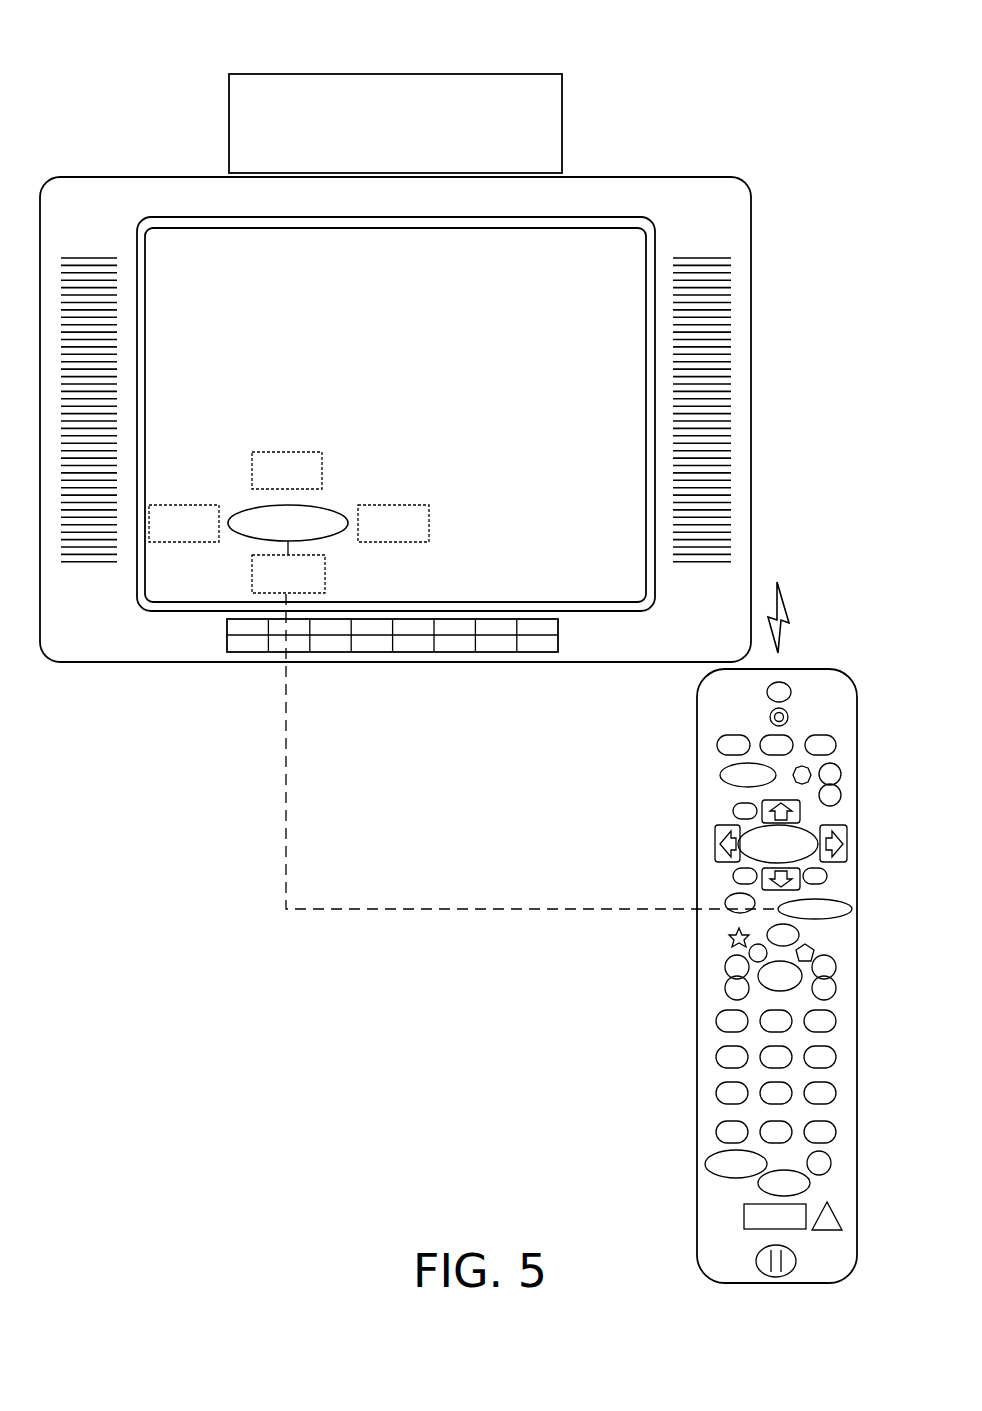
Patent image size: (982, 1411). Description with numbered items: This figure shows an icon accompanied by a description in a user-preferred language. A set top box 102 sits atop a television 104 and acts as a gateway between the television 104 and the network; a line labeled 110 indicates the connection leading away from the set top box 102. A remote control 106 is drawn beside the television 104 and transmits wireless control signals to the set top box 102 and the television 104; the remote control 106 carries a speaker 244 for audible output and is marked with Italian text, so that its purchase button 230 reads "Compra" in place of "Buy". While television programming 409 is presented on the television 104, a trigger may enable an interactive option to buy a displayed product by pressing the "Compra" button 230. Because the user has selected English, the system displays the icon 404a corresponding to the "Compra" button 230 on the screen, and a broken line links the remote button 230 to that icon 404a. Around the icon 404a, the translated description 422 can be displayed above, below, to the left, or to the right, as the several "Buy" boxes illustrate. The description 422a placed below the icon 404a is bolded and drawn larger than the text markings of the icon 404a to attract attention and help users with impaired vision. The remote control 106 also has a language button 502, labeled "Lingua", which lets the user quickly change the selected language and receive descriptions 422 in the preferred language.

The set top box 102 is at (395, 123).
The television 104 is at (750, 422).
The remote control 106 is at (698, 975).
The connection to network/headend 110 is at (229, 122).
The Compra button 230 is at (852, 908).
The speaker 244 is at (780, 682).
The icon 404a is at (300, 506).
The television programming 409 is at (395, 413).
The description 422 is at (250, 469).
The description 422a is at (288, 594).
The language button 502 is at (705, 1163).